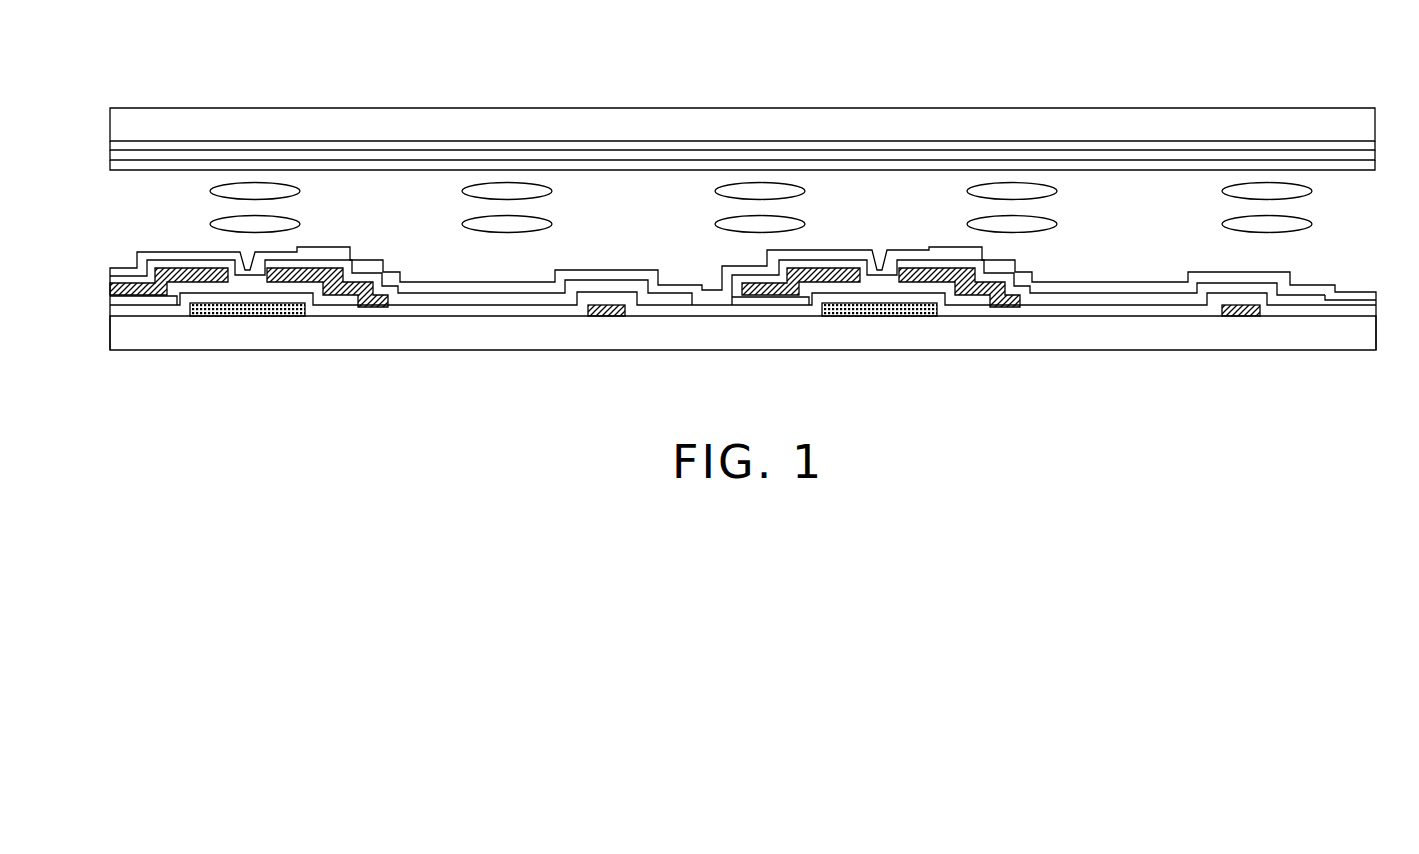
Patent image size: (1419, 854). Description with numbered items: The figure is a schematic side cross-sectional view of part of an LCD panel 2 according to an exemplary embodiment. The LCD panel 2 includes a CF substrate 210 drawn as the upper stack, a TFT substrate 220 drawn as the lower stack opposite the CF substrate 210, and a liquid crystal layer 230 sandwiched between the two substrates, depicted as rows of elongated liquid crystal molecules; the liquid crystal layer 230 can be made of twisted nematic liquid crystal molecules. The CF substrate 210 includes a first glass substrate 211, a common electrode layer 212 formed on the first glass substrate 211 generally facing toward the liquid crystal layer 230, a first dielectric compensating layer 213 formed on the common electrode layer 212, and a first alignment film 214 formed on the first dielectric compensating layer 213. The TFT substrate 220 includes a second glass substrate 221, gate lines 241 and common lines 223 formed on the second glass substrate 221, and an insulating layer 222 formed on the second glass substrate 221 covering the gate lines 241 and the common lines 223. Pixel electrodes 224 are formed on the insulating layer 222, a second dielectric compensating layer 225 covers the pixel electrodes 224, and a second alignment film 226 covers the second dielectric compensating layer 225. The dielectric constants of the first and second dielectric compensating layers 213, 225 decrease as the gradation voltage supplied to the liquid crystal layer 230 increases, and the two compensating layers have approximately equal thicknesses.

The LCD panel 2 is at (717, 223).
The CF substrate 210 is at (103, 107).
The first glass substrate 211 is at (1313, 128).
The common electrode layer 212 is at (1258, 150).
The first dielectric compensating layer 213 is at (1353, 158).
The first alignment film 214 is at (1173, 165).
The TFT substrate 220 is at (105, 275).
The second glass substrate 221 is at (1098, 330).
The insulating layer 222 is at (1293, 310).
The common lines 223 is at (598, 318).
The pixel electrodes 224 is at (1262, 292).
The second dielectric compensating layer 225 is at (1347, 302).
The second alignment film 226 is at (1130, 290).
The liquid crystal layer 230 is at (198, 182).
The gate lines 241 is at (900, 318).